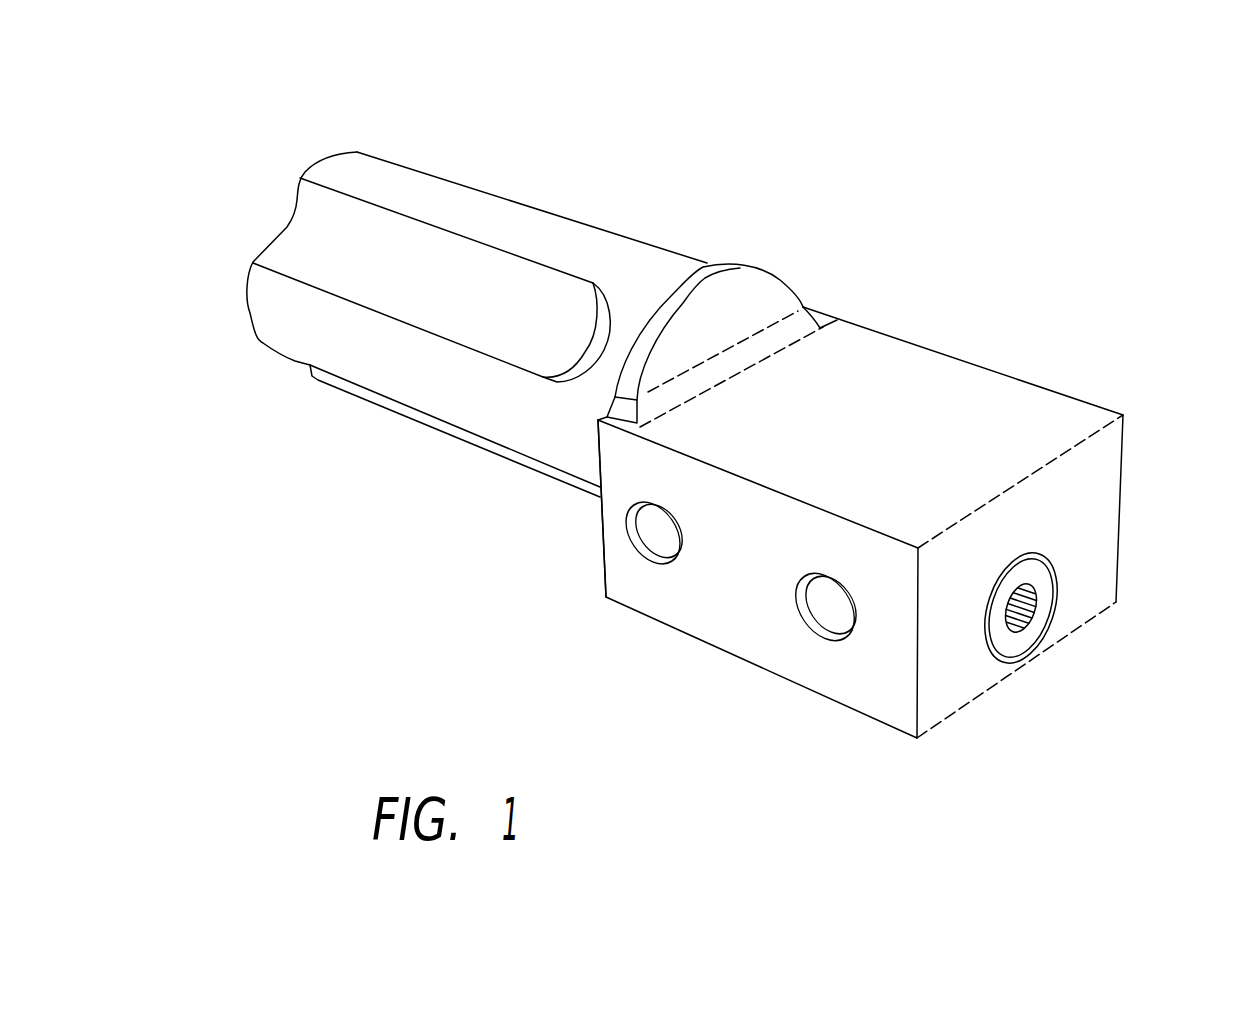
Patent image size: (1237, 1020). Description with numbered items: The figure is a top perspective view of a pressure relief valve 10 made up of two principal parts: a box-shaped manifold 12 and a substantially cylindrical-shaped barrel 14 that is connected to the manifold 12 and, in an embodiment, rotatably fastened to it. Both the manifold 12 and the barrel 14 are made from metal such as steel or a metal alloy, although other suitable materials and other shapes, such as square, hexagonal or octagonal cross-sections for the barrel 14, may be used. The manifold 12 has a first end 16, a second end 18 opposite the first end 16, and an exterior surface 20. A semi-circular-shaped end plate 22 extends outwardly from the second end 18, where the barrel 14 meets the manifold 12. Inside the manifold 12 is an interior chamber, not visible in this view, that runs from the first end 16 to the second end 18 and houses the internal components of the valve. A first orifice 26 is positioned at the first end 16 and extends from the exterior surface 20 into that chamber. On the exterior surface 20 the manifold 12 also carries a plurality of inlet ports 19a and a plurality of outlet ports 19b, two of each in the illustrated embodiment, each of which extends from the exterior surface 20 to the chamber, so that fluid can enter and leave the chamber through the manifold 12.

The pressure relief valve 10 is at (847, 135).
The manifold 12 is at (842, 530).
The barrel 14 is at (340, 272).
The first end 16 is at (1123, 415).
The second end 18 is at (597, 582).
The inlet port 19a is at (817, 617).
The outlet port 19b is at (657, 530).
The exterior surface 20 is at (1080, 587).
The end plate 22 is at (703, 267).
The first orifice 26 is at (1053, 563).